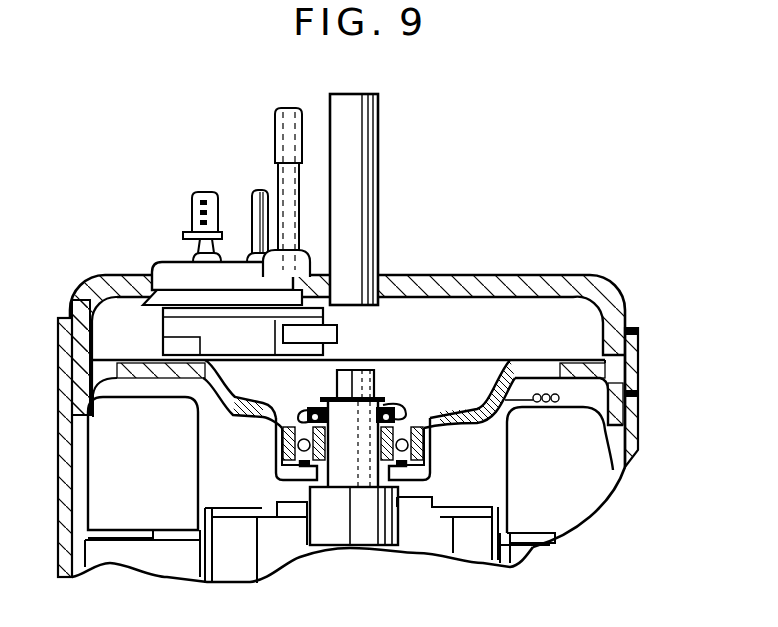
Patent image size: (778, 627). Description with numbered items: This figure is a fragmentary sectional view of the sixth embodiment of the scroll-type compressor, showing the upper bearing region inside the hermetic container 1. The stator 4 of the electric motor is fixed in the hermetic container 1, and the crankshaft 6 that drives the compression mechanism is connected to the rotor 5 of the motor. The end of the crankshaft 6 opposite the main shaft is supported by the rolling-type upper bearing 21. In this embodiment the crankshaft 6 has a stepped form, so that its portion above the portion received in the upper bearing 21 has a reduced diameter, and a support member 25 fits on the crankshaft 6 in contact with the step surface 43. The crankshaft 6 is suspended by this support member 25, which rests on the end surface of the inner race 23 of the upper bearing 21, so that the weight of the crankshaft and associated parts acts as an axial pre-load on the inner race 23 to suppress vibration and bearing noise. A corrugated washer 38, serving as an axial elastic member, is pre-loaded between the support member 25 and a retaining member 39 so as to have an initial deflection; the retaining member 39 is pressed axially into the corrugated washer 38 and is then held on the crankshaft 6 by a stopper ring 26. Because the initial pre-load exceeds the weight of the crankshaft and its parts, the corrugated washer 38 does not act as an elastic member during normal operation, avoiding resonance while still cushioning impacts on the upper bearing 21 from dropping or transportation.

The hermetic container 1 is at (638, 356).
The stator 4 is at (123, 557).
The rotor 5 is at (230, 540).
The crankshaft 6 is at (330, 517).
The upper bearing 21 is at (307, 430).
The inner race 23 is at (310, 410).
The support member 25 is at (407, 423).
The stopper ring 26 is at (352, 392).
The corrugated washer 38 is at (385, 403).
The retaining member 39 is at (325, 398).
The step surface 43 is at (350, 418).